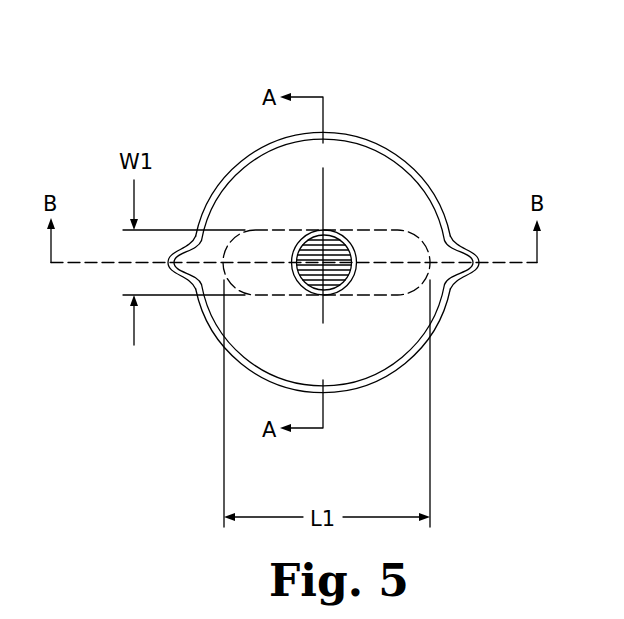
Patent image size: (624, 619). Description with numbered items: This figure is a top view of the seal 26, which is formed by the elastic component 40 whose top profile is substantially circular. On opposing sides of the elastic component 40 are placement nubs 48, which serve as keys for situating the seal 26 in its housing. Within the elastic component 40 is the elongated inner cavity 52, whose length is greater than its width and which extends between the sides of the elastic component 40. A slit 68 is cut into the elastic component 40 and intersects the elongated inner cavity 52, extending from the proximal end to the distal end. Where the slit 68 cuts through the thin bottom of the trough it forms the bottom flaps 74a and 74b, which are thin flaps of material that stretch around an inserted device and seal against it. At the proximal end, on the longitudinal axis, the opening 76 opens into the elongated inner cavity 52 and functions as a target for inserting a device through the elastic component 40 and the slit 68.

The seal 26 is at (502, 83).
The elastic component 40 is at (407, 160).
The placement nubs 48 is at (171, 282).
The elongated inner cavity 52 is at (398, 226).
The slit 68 is at (327, 172).
The opening 76 is at (298, 232).
The bottom flap 74a is at (337, 257).
The bottom flap 74b is at (307, 272).